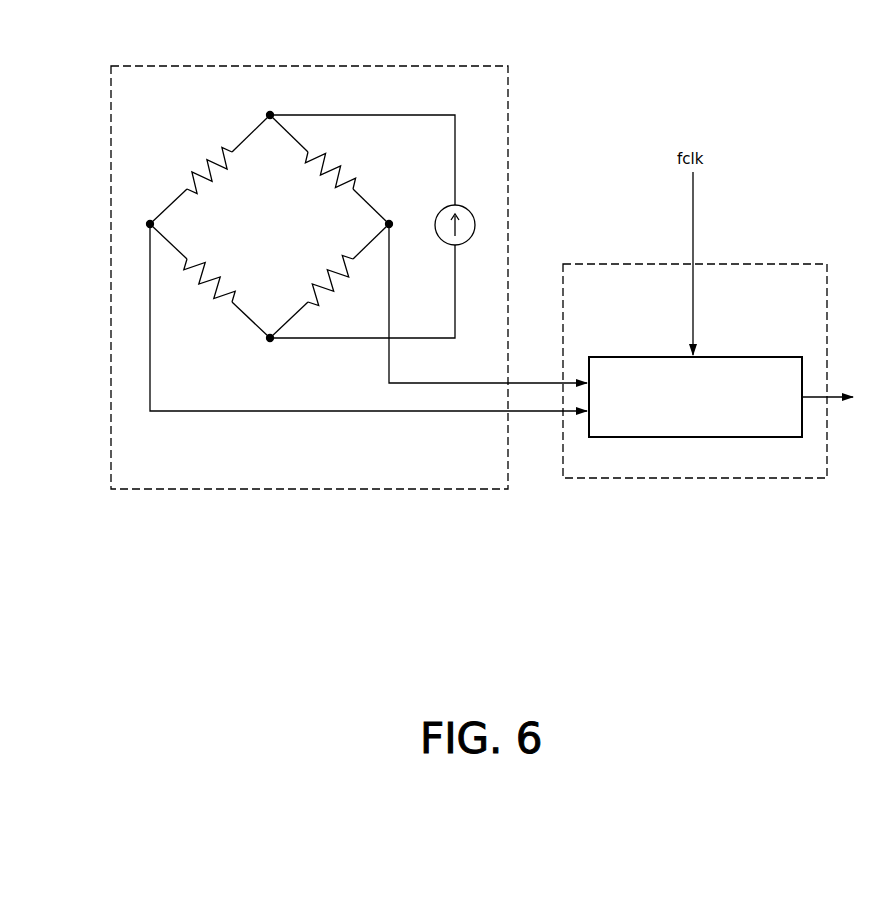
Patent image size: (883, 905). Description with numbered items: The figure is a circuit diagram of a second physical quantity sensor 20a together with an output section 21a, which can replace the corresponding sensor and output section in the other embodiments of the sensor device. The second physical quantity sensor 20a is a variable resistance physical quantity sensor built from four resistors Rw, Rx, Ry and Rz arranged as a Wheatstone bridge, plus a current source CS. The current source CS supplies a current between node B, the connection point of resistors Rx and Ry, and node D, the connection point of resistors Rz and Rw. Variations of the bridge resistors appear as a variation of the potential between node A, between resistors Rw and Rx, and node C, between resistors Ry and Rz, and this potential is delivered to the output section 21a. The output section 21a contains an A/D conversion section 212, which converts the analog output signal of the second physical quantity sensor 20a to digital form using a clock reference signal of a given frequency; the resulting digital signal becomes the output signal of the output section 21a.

The second physical quantity sensor 20a is at (158, 66).
The output section 21a is at (708, 343).
The A/D conversion section 212 is at (772, 357).